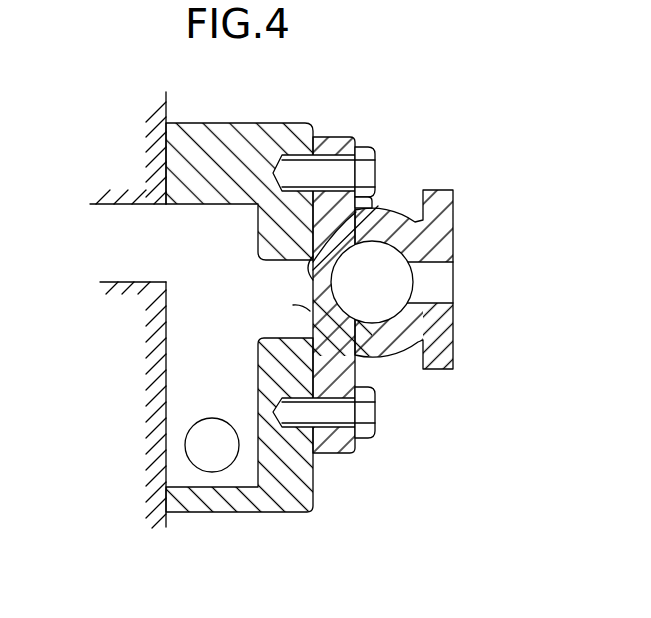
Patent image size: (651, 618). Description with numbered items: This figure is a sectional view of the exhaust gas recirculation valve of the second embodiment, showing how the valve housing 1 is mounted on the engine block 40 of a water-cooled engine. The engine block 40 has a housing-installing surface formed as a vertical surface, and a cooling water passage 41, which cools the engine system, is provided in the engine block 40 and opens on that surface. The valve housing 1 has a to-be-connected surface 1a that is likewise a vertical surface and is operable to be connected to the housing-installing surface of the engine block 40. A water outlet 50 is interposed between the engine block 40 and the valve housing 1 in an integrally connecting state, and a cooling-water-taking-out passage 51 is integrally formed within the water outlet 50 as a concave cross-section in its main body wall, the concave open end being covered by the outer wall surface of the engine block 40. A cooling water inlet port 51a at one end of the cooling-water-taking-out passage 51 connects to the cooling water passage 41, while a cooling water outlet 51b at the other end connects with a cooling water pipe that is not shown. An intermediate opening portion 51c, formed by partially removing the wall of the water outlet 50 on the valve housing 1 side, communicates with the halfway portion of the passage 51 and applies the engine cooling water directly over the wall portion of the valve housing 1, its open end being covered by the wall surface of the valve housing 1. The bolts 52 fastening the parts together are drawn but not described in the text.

The valve housing 1 is at (456, 210).
The to-be-connected surface 1a is at (378, 209).
The engine block 40 is at (154, 172).
The cooling water passage 41 is at (102, 248).
The water outlet 50 is at (259, 122).
The cooling-water-taking-out passage 51 is at (212, 363).
The cooling water inlet port 51a is at (172, 252).
The cooling water outlet 51b is at (213, 458).
The intermediate opening portion 51c is at (356, 357).
The bolt 52 is at (380, 434).